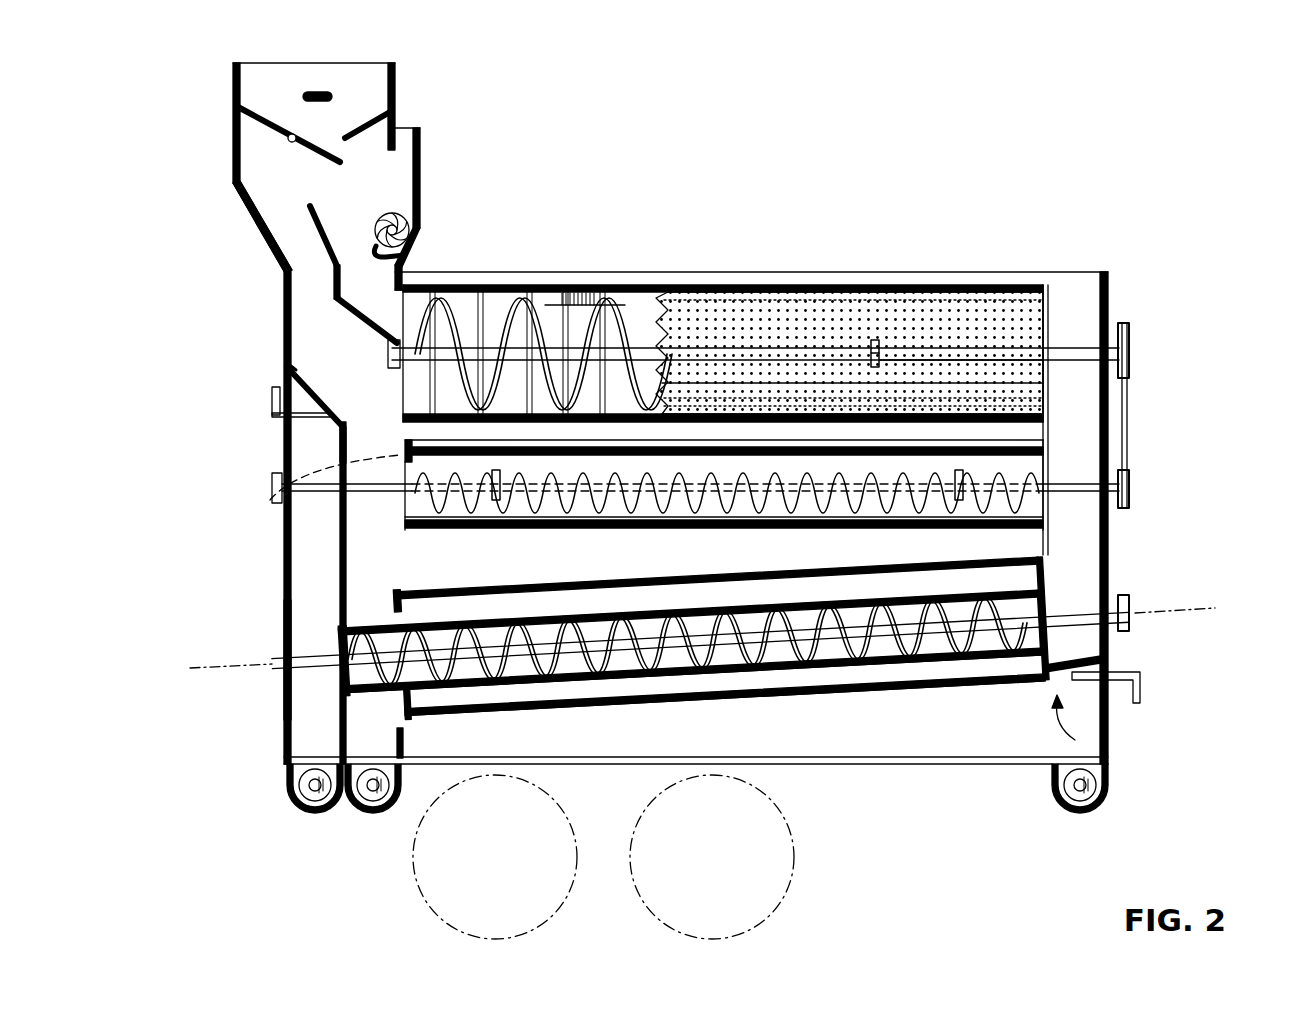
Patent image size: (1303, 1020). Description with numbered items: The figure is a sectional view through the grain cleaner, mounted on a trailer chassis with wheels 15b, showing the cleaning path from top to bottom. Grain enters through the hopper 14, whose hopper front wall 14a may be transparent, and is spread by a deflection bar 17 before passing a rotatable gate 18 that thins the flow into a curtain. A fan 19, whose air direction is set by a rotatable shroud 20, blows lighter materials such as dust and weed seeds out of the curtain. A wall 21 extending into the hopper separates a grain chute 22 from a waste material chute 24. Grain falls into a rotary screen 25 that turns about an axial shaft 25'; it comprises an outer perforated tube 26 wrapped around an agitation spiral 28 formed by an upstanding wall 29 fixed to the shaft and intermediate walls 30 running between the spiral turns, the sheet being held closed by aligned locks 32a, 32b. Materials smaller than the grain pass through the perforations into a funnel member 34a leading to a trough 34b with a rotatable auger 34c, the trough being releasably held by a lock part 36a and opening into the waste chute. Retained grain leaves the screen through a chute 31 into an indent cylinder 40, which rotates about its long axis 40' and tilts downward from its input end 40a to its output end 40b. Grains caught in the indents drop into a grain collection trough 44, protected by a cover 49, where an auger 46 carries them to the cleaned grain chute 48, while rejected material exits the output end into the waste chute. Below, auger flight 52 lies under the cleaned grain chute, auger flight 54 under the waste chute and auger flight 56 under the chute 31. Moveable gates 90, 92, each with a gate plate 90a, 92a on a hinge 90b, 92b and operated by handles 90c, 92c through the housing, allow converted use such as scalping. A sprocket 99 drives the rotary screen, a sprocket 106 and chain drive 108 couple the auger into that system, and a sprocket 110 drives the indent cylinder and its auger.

The hopper 14 is at (397, 98).
The hopper front wall 14a is at (420, 140).
The deflection bar 17 is at (333, 96).
The gate 18 is at (318, 151).
The fan 19 is at (406, 233).
The shroud 20 is at (405, 207).
The wall 21 is at (298, 213).
The grain chute 22 is at (368, 270).
The waste material chute 24 is at (310, 300).
The rotary screen 25 is at (723, 314).
The axial shaft 25' is at (911, 310).
The outer perforated tube 26 is at (600, 290).
The agitation spiral 28 is at (463, 338).
The upstanding wall 29 is at (540, 334).
The intermediate walls 30 is at (610, 298).
The chute 31 is at (1070, 390).
The lock 32a is at (875, 340).
The lock 32b is at (883, 366).
The funnel member 34a is at (496, 470).
The trough 34b is at (533, 532).
The auger 34c is at (285, 500).
The lock part 36a is at (963, 470).
The indent cylinder 40 is at (717, 618).
The long axis 40' is at (703, 599).
The input end 40a is at (1028, 665).
The output end 40b is at (406, 705).
The grain collection trough 44 is at (827, 666).
The auger 46 is at (888, 688).
The cleaned grain chute 48 is at (314, 705).
The cover 49 is at (360, 628).
The auger flight 52 is at (300, 806).
The auger flight 54 is at (366, 813).
The auger flight 56 is at (1074, 812).
The wheels 15b is at (414, 876).
The gate 90 is at (291, 366).
The gate plate 90a is at (290, 363).
The hinge 90b is at (338, 432).
The handle 90c is at (272, 395).
The gate 92 is at (1108, 740).
The gate plate 92a is at (1060, 687).
The hinge 92b is at (1110, 662).
The handle 92c is at (1142, 684).
The sprocket 99 is at (1130, 340).
The sprocket 106 is at (1130, 483).
The chain drive 108 is at (1130, 437).
The sprocket 110 is at (1130, 600).